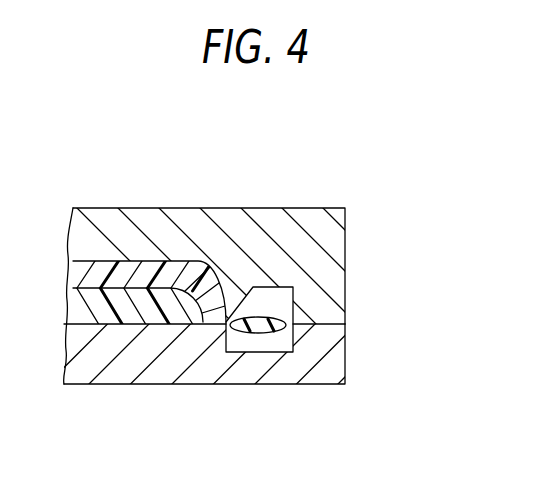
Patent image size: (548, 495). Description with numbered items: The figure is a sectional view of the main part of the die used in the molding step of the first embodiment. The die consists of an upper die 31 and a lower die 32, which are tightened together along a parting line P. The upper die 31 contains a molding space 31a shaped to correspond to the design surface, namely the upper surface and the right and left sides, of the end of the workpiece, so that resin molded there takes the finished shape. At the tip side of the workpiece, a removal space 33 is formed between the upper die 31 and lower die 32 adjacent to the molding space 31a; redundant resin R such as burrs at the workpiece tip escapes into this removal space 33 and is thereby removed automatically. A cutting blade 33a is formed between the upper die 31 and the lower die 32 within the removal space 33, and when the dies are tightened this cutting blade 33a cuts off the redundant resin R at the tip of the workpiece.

The upper die 31 is at (332, 227).
The molding space 31a is at (107, 262).
The lower die 32 is at (333, 363).
The removal space 33 is at (292, 291).
The cutting blade 33a is at (226, 323).
The parting line P is at (333, 326).
The redundant resin R is at (263, 333).